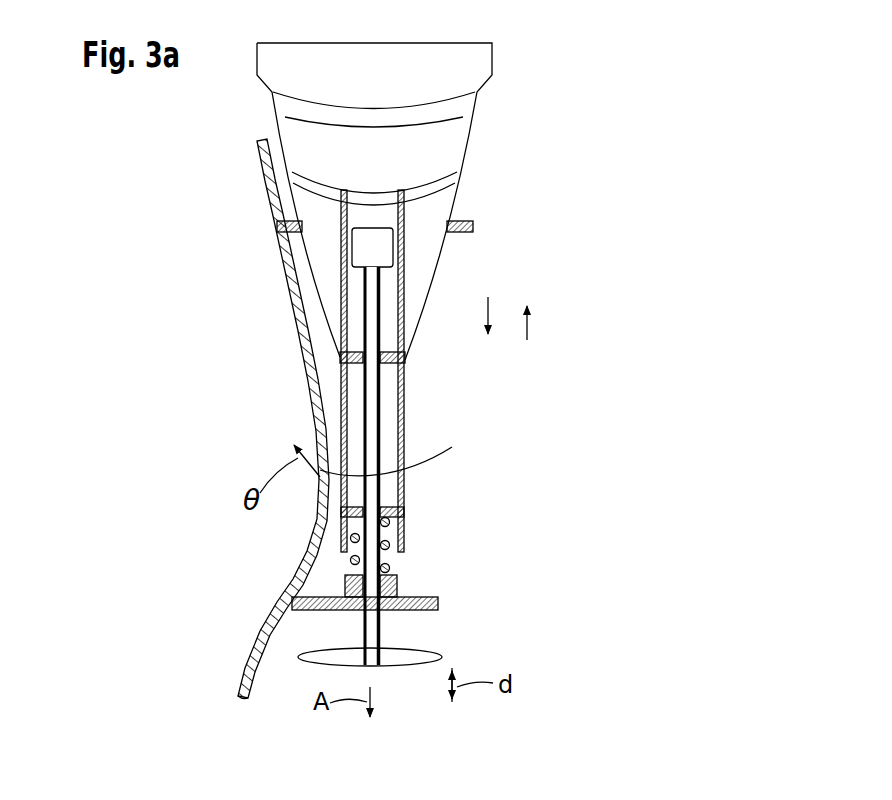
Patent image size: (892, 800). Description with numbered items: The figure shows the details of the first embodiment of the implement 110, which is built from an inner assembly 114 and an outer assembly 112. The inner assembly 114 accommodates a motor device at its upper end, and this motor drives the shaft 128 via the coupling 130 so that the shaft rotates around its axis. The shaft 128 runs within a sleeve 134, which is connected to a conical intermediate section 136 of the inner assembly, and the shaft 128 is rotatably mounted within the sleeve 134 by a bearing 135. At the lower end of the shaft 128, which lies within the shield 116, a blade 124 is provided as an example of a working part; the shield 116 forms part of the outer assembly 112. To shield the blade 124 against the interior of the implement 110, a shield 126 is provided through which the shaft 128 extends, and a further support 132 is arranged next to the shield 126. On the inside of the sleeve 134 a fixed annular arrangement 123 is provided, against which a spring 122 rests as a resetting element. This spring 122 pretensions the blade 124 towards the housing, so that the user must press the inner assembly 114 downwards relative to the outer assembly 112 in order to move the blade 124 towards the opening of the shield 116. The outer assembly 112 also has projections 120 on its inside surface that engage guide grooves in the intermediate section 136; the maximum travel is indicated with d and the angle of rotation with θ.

The implement 110 is at (226, 212).
The outer assembly 112 is at (270, 268).
The inner assembly 114 is at (492, 62).
The shield 116 is at (260, 630).
The projections 120 is at (471, 226).
The spring 122 is at (388, 567).
The fixed annular arrangement 123 is at (400, 508).
The blade 124 is at (415, 655).
The shield 126 is at (417, 610).
The shaft 128 is at (373, 410).
The coupling 130 is at (373, 240).
The support 132 is at (397, 587).
The sleeve 134 is at (404, 382).
The bearing 135 is at (404, 360).
The conical intermediate section 136 is at (438, 258).